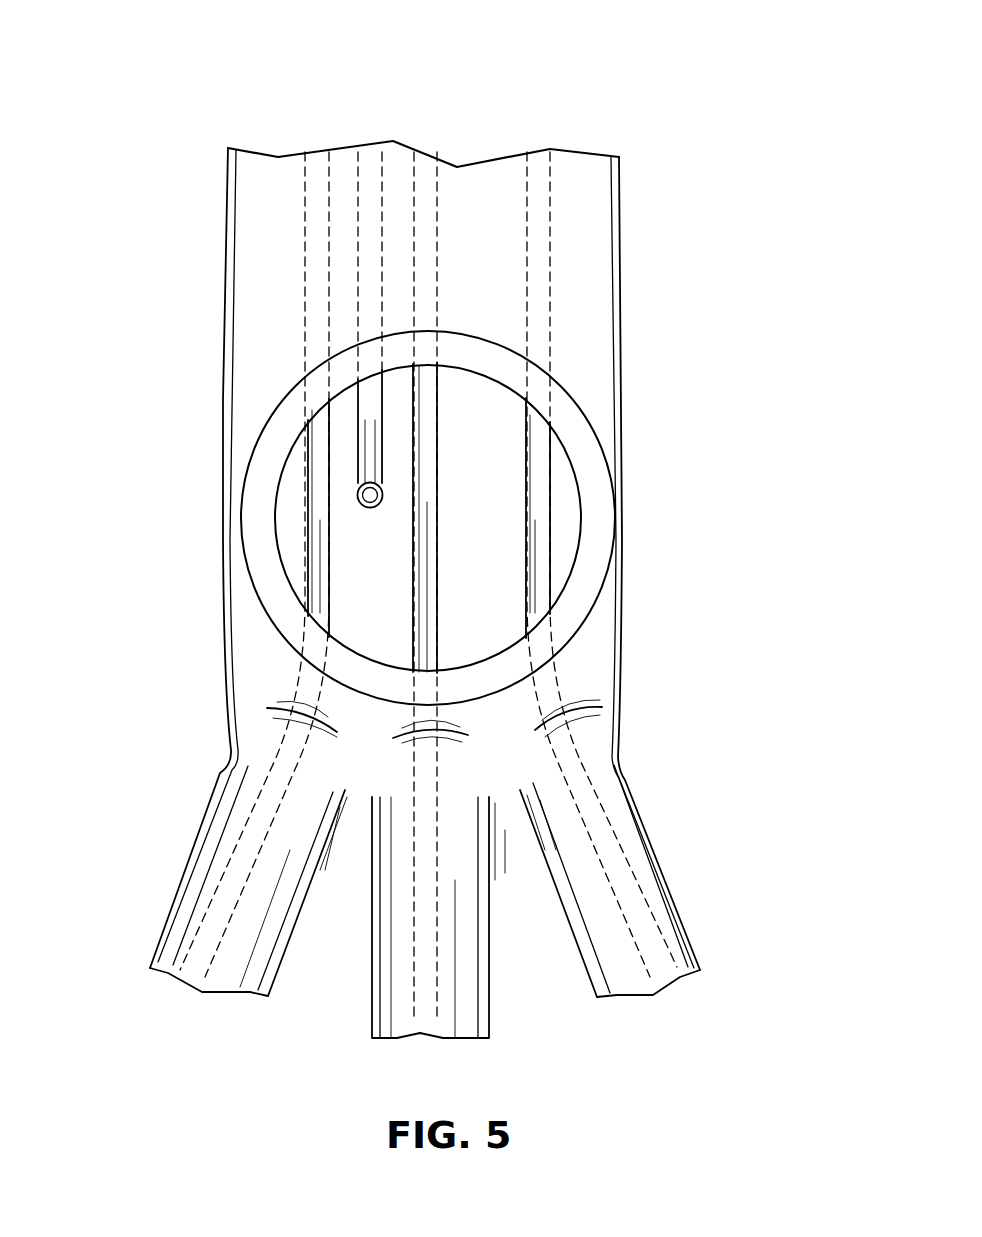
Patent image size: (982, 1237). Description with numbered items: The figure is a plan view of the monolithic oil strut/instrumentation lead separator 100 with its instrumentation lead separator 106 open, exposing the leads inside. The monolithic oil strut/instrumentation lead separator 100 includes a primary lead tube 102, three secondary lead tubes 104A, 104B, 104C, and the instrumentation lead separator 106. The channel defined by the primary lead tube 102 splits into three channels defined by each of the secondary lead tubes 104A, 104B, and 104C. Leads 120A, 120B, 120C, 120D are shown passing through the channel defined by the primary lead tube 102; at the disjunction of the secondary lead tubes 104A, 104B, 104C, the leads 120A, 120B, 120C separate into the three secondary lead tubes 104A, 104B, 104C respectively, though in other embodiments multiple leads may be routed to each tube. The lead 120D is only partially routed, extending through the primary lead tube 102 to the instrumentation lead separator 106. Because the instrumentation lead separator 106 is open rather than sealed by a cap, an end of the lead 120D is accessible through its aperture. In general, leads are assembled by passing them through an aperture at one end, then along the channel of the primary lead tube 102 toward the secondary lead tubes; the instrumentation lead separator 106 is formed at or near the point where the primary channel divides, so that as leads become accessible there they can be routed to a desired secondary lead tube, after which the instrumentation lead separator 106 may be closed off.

The monolithic oil strut/instrumentation lead separator 100 is at (173, 122).
The primary lead tube 102 is at (622, 230).
The secondary lead tube 104A is at (242, 925).
The secondary lead tube 104B is at (467, 947).
The secondary lead tube 104C is at (657, 898).
The instrumentation lead separator 106 is at (629, 574).
The lead 120A is at (308, 562).
The lead 120B is at (438, 503).
The lead 120C is at (548, 530).
The lead 120D is at (357, 475).